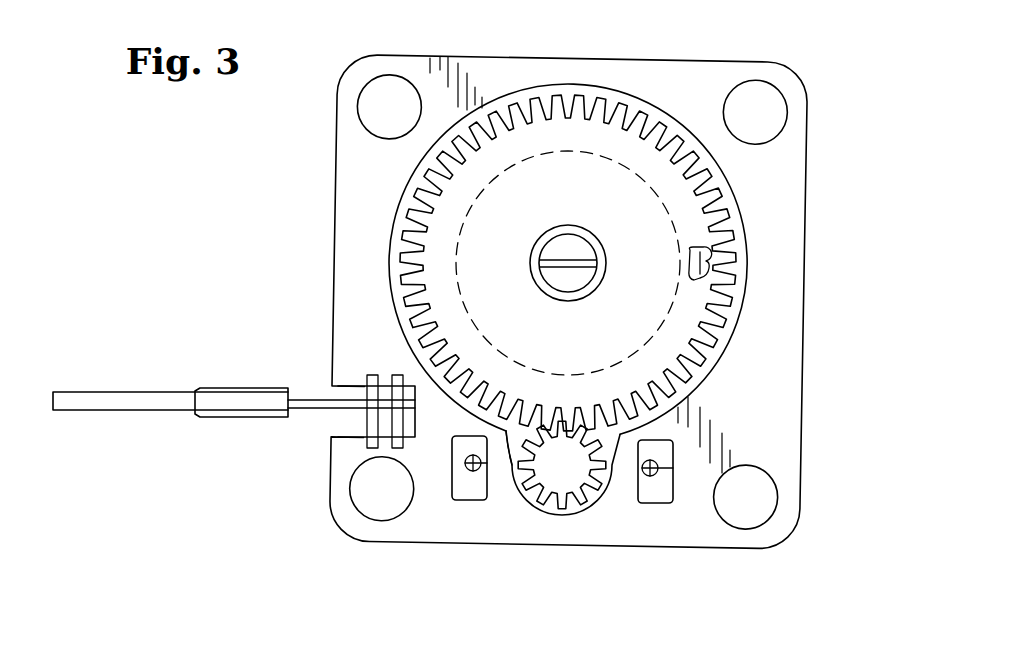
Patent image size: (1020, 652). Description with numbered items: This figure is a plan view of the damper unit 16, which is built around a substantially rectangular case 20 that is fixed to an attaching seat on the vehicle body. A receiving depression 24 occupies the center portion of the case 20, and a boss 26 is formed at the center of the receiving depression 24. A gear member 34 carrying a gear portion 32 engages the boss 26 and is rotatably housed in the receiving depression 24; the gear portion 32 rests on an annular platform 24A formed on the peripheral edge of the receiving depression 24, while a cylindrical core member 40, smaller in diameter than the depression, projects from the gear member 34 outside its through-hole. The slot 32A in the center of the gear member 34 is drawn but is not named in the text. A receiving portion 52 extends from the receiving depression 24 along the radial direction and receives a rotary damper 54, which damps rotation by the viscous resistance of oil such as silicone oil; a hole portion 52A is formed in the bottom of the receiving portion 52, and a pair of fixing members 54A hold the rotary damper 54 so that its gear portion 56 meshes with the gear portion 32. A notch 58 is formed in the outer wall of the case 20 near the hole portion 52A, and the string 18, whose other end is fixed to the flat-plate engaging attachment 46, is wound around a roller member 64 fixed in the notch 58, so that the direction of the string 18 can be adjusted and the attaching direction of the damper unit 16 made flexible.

The damper unit 16 is at (757, 44).
The string 18 is at (322, 410).
The case 20 is at (807, 324).
The receiving depression 24 is at (621, 97).
The annular platform 24A is at (592, 97).
The boss 26 is at (565, 286).
The gear portion 32 is at (707, 214).
The slot 32A is at (572, 263).
The gear member 34 is at (750, 259).
The core member 40 is at (652, 344).
The engaging attachment 46 is at (133, 404).
The receiving portion 52 is at (530, 478).
The hole portion 52A is at (503, 428).
The rotary damper 54 is at (563, 516).
The fixing members 54A is at (468, 487).
The gear portion 56 is at (583, 511).
The notch 58 is at (340, 393).
The roller member 64 is at (377, 425).